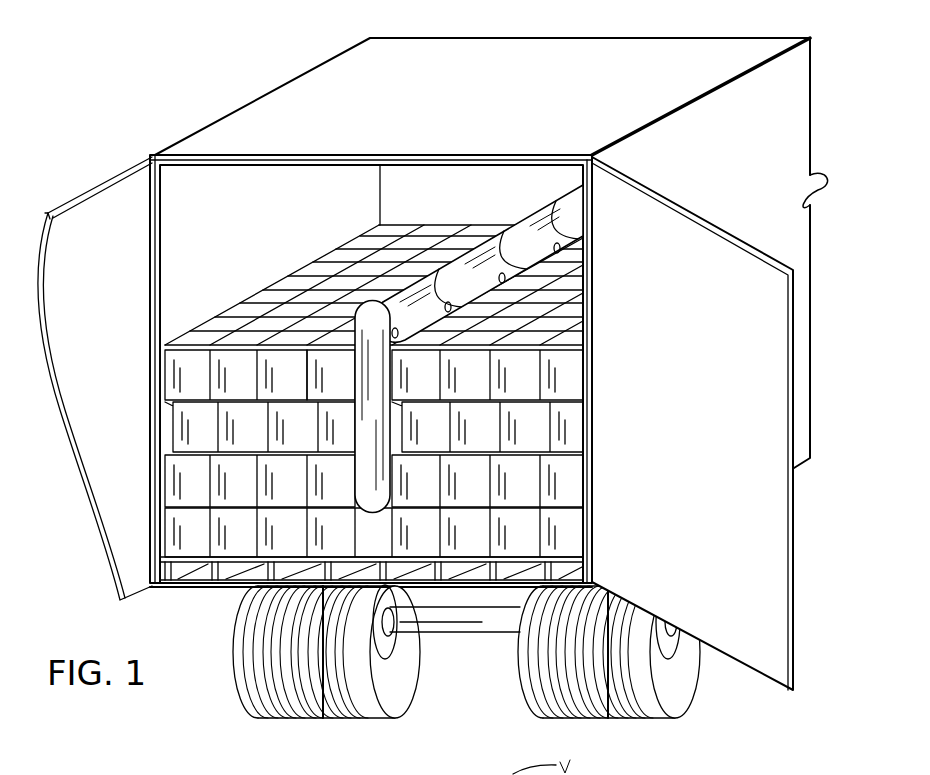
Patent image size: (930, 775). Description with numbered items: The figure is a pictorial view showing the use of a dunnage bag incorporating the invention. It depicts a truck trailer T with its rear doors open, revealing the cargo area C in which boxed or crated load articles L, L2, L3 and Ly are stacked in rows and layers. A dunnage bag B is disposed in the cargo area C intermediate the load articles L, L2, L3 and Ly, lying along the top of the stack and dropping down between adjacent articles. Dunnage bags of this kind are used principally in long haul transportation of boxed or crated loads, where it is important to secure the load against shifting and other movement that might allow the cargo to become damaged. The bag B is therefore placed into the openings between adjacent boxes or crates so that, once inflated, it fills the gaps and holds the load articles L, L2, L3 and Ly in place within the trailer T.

The truck trailer T is at (278, 127).
The cargo area C is at (527, 147).
The load article L is at (335, 392).
The dunnage bag B is at (380, 315).
The load article L2 is at (345, 418).
The load article L3 is at (420, 372).
The load article Ly is at (192, 472).